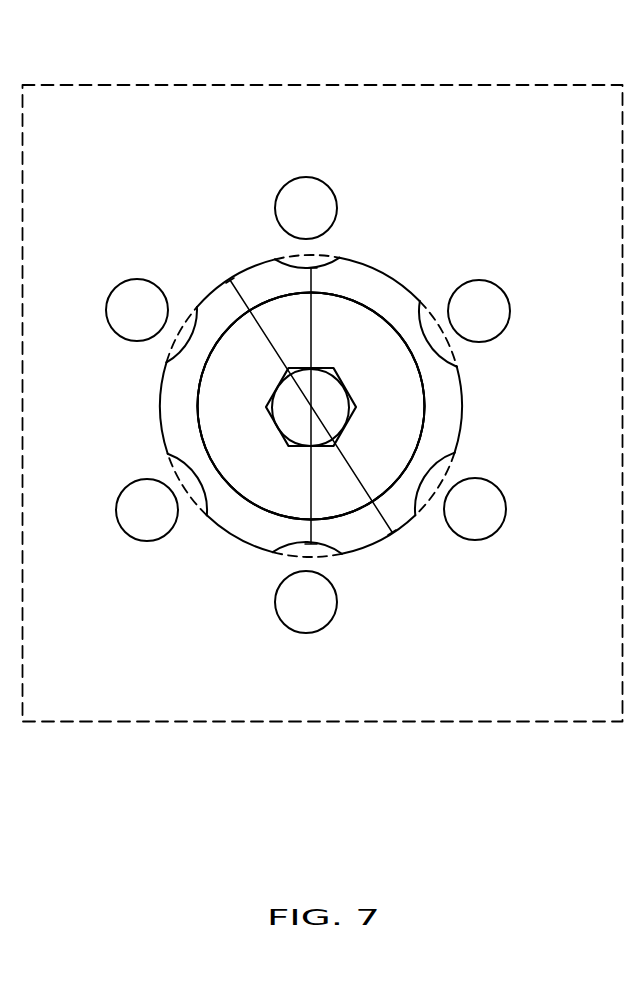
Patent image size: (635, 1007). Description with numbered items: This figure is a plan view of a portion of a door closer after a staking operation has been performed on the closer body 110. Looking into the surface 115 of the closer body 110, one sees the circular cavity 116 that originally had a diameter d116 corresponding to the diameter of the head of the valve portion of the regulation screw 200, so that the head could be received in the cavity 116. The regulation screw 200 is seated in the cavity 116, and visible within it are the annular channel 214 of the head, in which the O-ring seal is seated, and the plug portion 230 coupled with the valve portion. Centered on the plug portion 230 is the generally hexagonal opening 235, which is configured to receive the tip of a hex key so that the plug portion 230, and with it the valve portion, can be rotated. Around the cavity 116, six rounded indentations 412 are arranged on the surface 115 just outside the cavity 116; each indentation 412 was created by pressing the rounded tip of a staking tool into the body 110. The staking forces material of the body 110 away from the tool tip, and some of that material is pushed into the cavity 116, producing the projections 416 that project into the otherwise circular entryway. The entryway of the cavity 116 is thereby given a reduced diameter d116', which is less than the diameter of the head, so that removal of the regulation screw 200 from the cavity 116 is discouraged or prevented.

The closer body 110 is at (577, 108).
The surface 115 is at (468, 124).
The cavity 116 is at (231, 258).
The regulation screw 200 is at (124, 405).
The annular channel 214 is at (375, 287).
The plug portion 230 is at (207, 427).
The opening 235 is at (350, 384).
The rounded indentation 412 is at (337, 200).
The projections 416 is at (459, 377).
The diameter d116 is at (304, 406).
The reduced diameter d116' is at (350, 406).